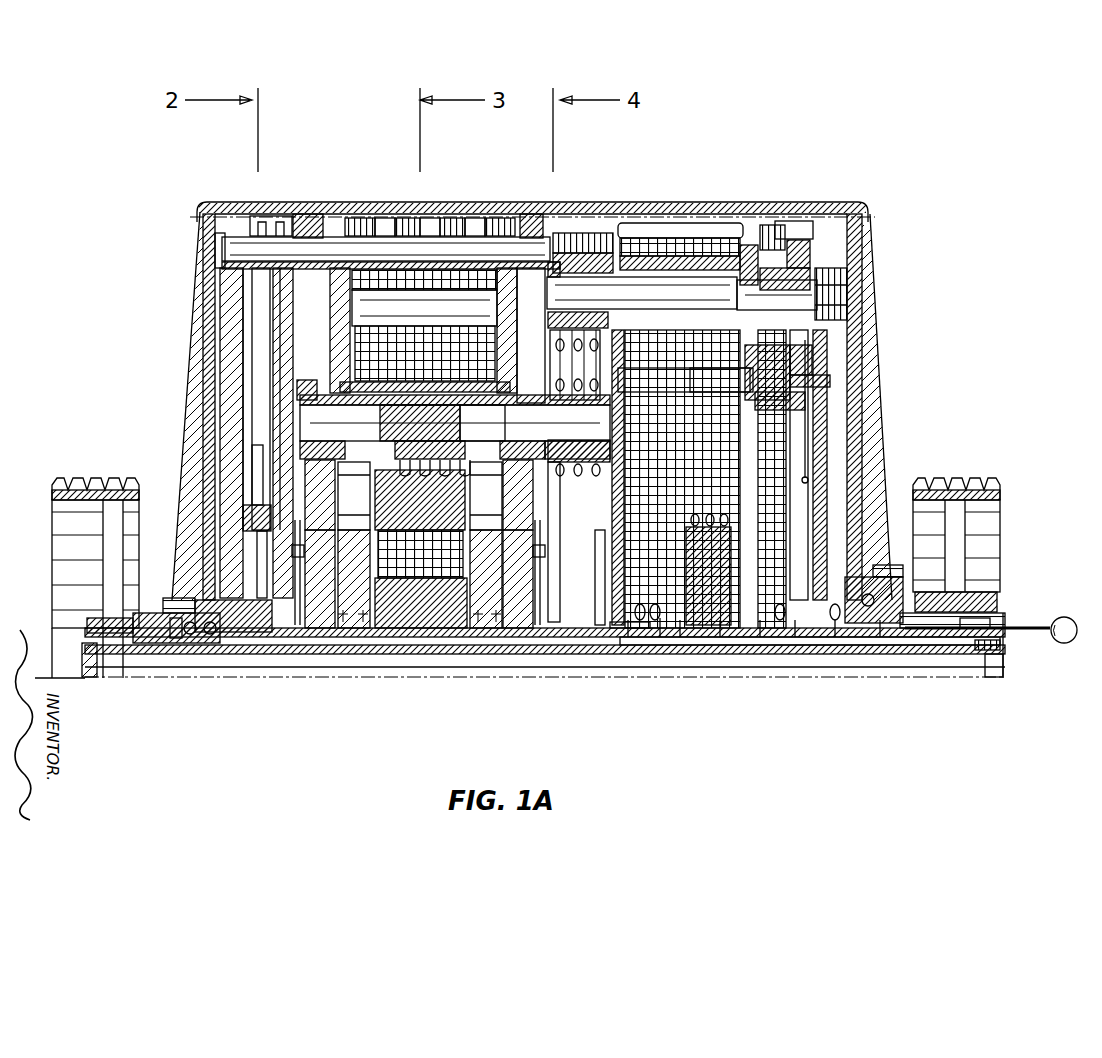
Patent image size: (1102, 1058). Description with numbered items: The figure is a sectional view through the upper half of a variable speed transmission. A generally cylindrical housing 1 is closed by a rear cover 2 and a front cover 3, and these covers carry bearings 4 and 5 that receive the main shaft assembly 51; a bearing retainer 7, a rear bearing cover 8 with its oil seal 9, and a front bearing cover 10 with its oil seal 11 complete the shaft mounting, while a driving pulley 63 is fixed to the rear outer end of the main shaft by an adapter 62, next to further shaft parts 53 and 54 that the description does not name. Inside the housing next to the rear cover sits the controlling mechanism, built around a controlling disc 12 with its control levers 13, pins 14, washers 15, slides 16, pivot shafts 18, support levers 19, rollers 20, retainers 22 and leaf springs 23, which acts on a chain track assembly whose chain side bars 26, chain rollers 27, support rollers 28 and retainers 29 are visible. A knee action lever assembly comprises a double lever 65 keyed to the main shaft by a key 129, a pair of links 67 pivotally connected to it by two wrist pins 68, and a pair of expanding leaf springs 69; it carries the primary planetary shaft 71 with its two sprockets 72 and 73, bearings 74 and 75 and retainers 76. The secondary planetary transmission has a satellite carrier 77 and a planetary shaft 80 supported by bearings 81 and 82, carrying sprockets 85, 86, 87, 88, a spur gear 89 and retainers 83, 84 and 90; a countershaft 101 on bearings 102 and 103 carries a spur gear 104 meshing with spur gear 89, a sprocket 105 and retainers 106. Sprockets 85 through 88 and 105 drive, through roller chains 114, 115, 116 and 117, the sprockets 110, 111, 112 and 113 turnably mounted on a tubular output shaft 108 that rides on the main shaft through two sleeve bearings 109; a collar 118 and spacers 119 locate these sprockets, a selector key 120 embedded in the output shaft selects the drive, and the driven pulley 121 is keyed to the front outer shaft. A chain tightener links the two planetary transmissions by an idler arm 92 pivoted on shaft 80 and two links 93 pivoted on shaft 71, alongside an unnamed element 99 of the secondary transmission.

The housing 1 is at (300, 212).
The rear cover 2 is at (205, 310).
The front cover 3 is at (860, 268).
The bearing 4 is at (215, 640).
The bearing 5 is at (868, 578).
The bearing retainer 7 is at (855, 637).
The rear bearing cover 8 is at (200, 632).
The oil seal 9 is at (178, 632).
The front bearing cover 10 is at (900, 637).
The oil seal 11 is at (880, 637).
The controlling disc 12 is at (235, 592).
The control levers 13 is at (275, 342).
The pins 14 is at (245, 520).
The washers 15 is at (258, 545).
The slides 16 is at (252, 492).
The pivot shafts 18 is at (262, 246).
The support levers 19 is at (330, 214).
The rollers 20 is at (393, 222).
The retainers 22 is at (238, 280).
The leaf springs 23 is at (375, 410).
The chain side bars 26 is at (420, 222).
The chain rollers 27 is at (440, 222).
The support rollers 28 is at (372, 225).
The retainers 29 is at (360, 222).
The main shaft assembly 51 is at (93, 660).
The bearing housing 53 is at (152, 645).
The cap 54 is at (170, 598).
The adapter 62 is at (90, 628).
The driving pulley 63 is at (92, 482).
The double lever 65 is at (440, 652).
The links 67 is at (287, 522).
The wrist pins 68 is at (300, 558).
The expanding leaf springs 69 is at (440, 586).
The planetary shaft 71 is at (398, 465).
The sprocket 72 is at (430, 480).
The sprocket 73 is at (560, 482).
The bearing 74 is at (308, 466).
The bearing 75 is at (510, 466).
The retainers 76 is at (310, 392).
The satellite carrier 77 is at (665, 224).
The planetary shaft 80 is at (845, 302).
The bearing 81 is at (612, 276).
The bearing 82 is at (742, 255).
The retainer 83 is at (603, 252).
The retainer 84 is at (762, 240).
The sprocket 85 is at (585, 240).
The sprocket 86 is at (640, 248).
The sprocket 87 is at (688, 256).
The sprocket 88 is at (778, 243).
The spur gear 89 is at (800, 235).
The retainer 90 is at (562, 302).
The idler arm 92 is at (562, 332).
The links 93 is at (577, 480).
The coil 99 is at (567, 350).
The countershaft 101 is at (822, 385).
The bearing 102 is at (685, 378).
The bearing 103 is at (740, 385).
The spur gear 104 is at (797, 420).
The sprocket 105 is at (798, 410).
The retainers 106 is at (782, 365).
The tubular output shaft 108 is at (975, 625).
The sleeve bearings 109 is at (608, 650).
The sprocket 110 is at (680, 637).
The sprocket 111 is at (630, 637).
The sprocket 112 is at (760, 637).
The sprocket 113 is at (835, 637).
The roller chain 114 is at (740, 505).
The roller chain 115 is at (660, 637).
The roller chain 116 is at (720, 637).
The roller chain 117 is at (795, 637).
The collar 118 is at (600, 626).
The spacers 119 is at (828, 610).
The selector key 120 is at (1005, 625).
The driven pulley 121 is at (965, 482).
The key 129 is at (345, 645).